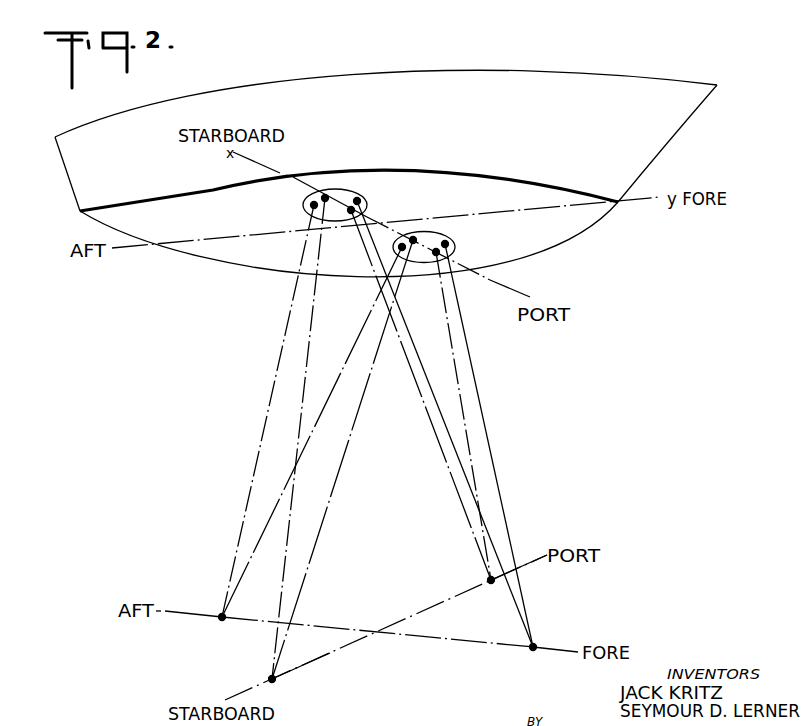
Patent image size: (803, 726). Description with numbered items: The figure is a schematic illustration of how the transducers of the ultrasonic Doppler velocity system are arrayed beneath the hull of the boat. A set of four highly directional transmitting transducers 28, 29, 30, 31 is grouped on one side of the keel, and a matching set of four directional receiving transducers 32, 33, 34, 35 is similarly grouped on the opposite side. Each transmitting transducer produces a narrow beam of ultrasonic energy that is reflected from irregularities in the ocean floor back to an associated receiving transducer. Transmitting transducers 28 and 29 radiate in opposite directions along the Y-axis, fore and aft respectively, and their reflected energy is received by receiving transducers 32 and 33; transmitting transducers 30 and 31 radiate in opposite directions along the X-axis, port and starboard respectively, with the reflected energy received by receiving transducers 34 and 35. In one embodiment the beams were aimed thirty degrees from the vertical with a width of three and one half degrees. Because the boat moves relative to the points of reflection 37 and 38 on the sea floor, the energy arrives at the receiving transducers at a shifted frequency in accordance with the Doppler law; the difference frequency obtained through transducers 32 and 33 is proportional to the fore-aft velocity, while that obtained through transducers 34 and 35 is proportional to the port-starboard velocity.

The transmitting transducer 28 is at (360, 200).
The transmitting transducer 29 is at (311, 206).
The transmitting transducer 30 is at (355, 211).
The transmitting transducer 31 is at (327, 197).
The receiving transducer 32 is at (447, 242).
The receiving transducer 33 is at (400, 247).
The receiving transducer 34 is at (436, 255).
The receiving transducer 35 is at (413, 237).
The point of reflection 37 is at (220, 616).
The point of reflection 38 is at (536, 647).